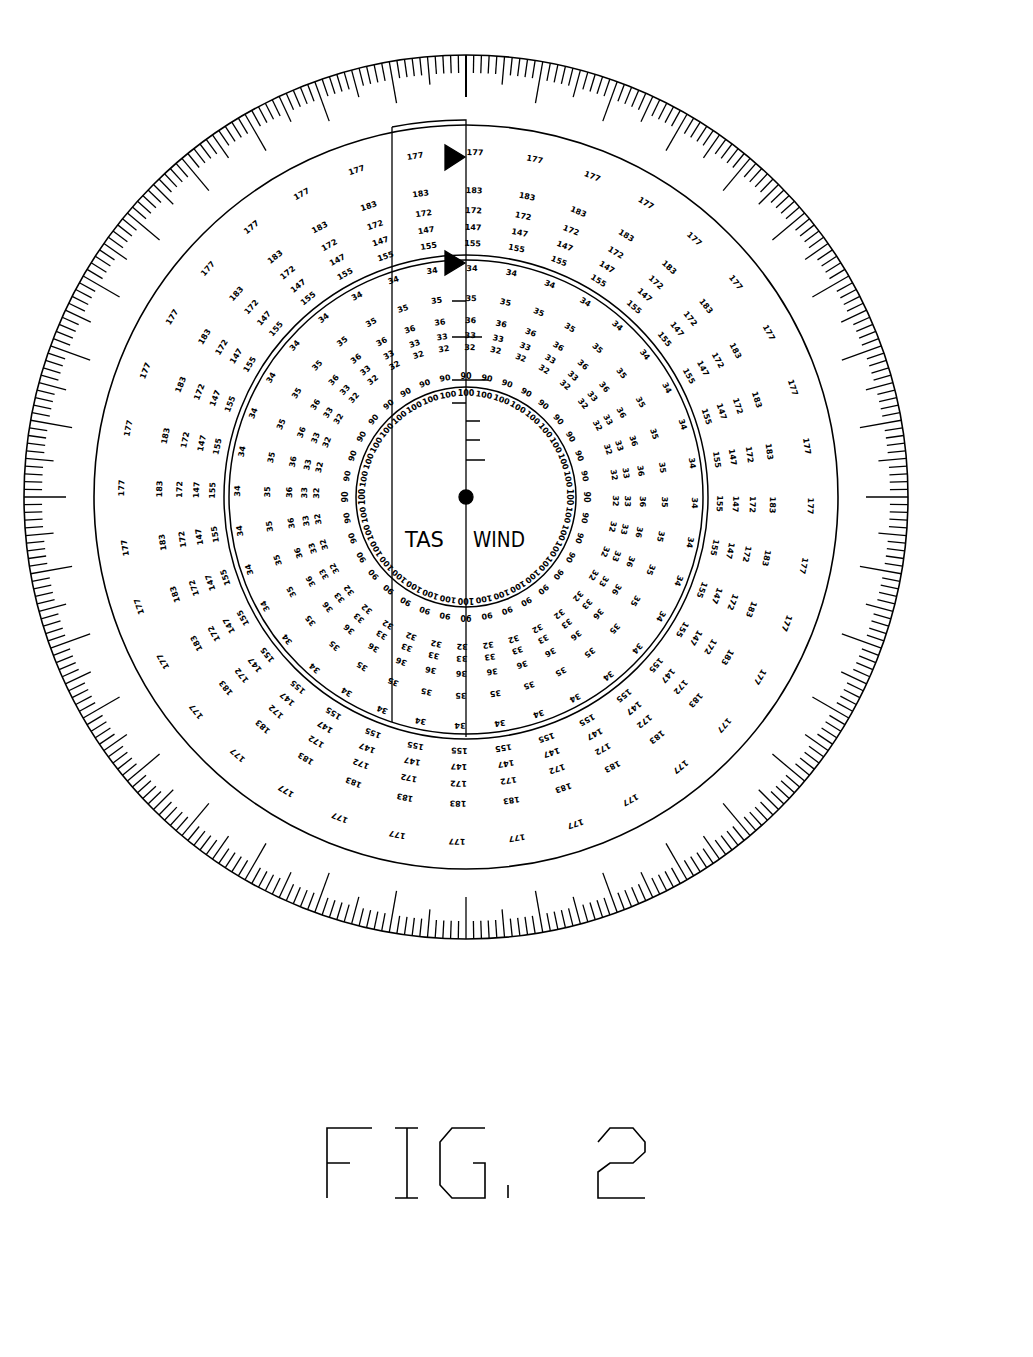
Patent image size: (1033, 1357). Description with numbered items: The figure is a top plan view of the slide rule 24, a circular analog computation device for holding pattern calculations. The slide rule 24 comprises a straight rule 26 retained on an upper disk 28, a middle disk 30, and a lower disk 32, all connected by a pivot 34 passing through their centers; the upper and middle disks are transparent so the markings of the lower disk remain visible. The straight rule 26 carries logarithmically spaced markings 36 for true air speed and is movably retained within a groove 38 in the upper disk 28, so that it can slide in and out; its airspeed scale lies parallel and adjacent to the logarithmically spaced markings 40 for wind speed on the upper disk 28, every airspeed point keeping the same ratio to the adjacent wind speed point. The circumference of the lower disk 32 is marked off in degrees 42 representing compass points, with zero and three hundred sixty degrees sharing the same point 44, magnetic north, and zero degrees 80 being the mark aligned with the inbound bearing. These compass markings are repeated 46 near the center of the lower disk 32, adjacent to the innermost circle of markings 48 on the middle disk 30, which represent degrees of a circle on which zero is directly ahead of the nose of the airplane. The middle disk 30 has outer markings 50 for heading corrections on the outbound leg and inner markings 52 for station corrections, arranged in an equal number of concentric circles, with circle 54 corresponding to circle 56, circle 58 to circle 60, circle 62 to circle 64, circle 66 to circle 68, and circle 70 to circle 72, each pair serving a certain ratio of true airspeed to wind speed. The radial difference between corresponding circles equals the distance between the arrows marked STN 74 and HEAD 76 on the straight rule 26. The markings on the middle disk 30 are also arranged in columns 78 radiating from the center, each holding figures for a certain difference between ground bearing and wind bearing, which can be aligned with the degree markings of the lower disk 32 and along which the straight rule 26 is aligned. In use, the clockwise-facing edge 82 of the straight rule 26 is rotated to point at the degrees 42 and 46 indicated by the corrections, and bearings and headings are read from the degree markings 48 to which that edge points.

The slide rule 24 is at (183, 862).
The straight rule 26 is at (392, 176).
The upper disk 28 is at (347, 267).
The middle disk 30 is at (772, 281).
The lower disk 32 is at (770, 172).
The pivot 34 is at (452, 494).
The logarithmically spaced markings for true air speed 36 is at (420, 336).
The groove 38 is at (392, 694).
The logarithmically spaced markings for wind speed 40 is at (518, 422).
The degrees 42 is at (545, 932).
The point of zero and 360 degrees 44 is at (466, 58).
The repeated degree markings 46 is at (553, 513).
The innermost circle of markings 48 is at (585, 517).
The outer markings 50 is at (180, 482).
The inner markings 52 is at (284, 467).
The circle 54 is at (313, 508).
The circle 56 is at (222, 588).
The circle 58 is at (316, 590).
The circle 60 is at (215, 600).
The circle 62 is at (320, 620).
The circle 64 is at (225, 652).
The circle 66 is at (322, 662).
The circle 68 is at (235, 704).
The circle 70 is at (360, 699).
The circle 72 is at (242, 755).
The STN arrow 74 is at (464, 268).
The HEAD arrow 76 is at (466, 161).
The columns 78 is at (345, 170).
The zero degrees 80 is at (455, 408).
The clockwise-facing edge 82 is at (468, 200).